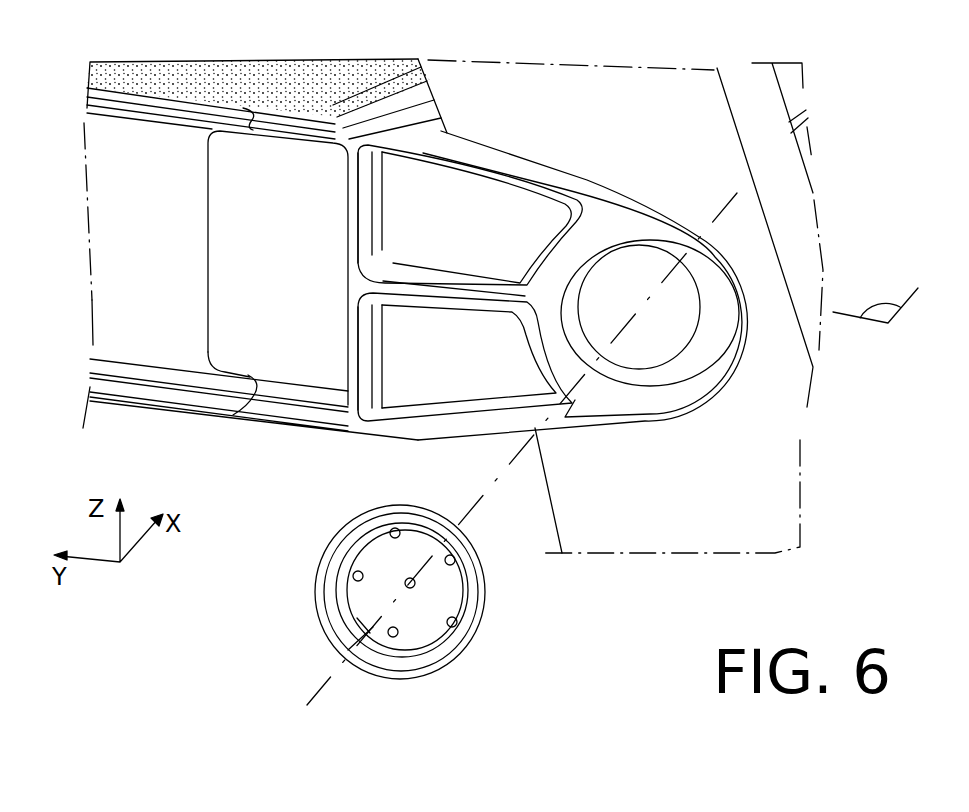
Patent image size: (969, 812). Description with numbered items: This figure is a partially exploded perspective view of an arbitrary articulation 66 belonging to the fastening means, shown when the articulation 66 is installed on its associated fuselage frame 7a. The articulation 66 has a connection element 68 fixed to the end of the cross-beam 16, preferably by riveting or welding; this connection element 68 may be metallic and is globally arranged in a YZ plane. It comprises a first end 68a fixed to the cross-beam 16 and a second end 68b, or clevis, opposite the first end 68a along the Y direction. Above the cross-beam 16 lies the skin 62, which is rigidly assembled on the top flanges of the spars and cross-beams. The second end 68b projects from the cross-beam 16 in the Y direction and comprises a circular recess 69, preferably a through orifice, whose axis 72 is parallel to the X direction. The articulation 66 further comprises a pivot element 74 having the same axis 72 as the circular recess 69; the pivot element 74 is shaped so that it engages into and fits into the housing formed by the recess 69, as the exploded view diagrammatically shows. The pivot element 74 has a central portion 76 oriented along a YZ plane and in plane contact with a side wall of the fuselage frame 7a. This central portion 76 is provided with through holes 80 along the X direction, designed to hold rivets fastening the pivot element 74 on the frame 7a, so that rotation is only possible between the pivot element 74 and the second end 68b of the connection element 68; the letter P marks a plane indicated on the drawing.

The skin 62 is at (314, 72).
The first end 68a is at (242, 211).
The connection element 68 is at (295, 352).
The cross-beam 16 is at (125, 352).
The articulation 66 is at (713, 452).
The second end 68b is at (622, 225).
The circular recess 69 is at (700, 334).
The axis 72 is at (764, 161).
The plane P is at (875, 301).
The fuselage frame 7a is at (667, 528).
The pivot element 74 is at (436, 637).
The central portion 76 is at (340, 627).
The through holes 80 is at (355, 575).